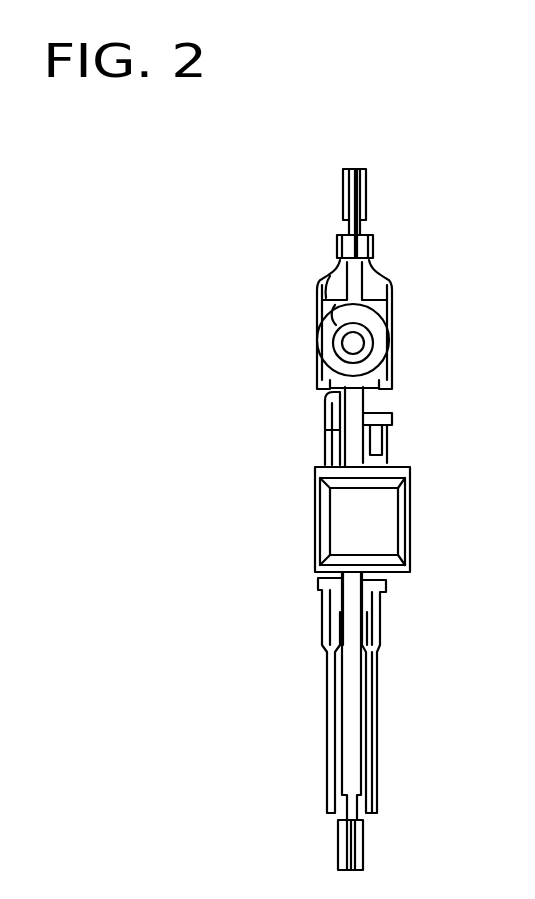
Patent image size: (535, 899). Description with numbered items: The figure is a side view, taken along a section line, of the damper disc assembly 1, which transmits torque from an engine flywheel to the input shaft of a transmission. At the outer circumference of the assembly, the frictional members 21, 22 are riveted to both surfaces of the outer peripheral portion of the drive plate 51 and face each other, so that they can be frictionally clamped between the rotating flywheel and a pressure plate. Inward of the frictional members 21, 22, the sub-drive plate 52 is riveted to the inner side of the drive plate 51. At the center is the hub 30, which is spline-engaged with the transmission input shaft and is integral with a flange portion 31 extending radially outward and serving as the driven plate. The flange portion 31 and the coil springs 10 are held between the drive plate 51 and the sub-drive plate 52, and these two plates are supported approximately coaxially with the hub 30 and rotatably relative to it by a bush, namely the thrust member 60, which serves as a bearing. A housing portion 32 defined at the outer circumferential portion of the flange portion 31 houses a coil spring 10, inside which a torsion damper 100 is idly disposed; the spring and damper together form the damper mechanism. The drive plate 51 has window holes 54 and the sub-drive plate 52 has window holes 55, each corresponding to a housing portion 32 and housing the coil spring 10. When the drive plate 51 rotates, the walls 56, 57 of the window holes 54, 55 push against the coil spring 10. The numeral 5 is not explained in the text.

The damper disc assembly 1 is at (394, 169).
The retainer 5 is at (357, 247).
The coil spring 10 is at (322, 378).
The frictional member 21 is at (367, 177).
The frictional member 22 is at (342, 177).
The hub 30 is at (407, 468).
The flange portion 31 is at (352, 662).
The housing portion 32 is at (385, 405).
The drive plate 51 is at (392, 278).
The sub-drive plate 52 is at (322, 279).
The window hole 54 is at (390, 298).
The window hole 55 is at (322, 298).
The wall 56 is at (393, 316).
The wall 57 is at (320, 311).
The thrust member 60 is at (390, 430).
The torsion damper 100 is at (353, 343).